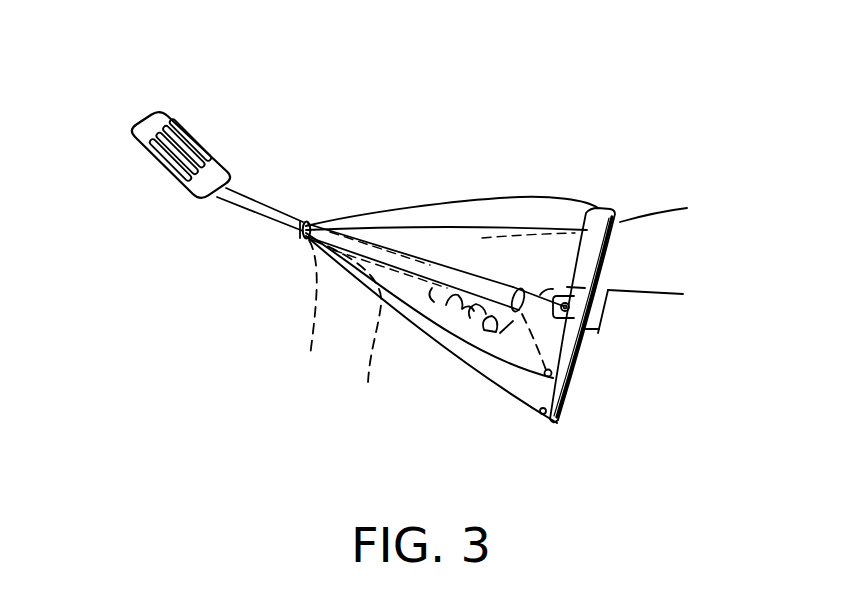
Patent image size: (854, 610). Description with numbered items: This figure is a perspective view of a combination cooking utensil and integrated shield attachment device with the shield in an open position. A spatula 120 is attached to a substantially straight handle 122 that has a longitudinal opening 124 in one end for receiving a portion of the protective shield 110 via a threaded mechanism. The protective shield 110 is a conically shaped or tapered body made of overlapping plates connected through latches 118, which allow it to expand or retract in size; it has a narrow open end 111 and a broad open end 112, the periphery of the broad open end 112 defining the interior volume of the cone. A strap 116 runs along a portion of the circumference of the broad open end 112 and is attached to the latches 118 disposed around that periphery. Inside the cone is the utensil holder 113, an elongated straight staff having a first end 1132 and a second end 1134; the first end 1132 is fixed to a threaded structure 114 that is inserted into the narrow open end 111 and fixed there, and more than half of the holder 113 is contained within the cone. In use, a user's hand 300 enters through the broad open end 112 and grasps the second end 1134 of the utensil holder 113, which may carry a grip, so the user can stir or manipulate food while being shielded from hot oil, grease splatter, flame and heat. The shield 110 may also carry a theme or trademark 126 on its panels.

The protective shield 110 is at (488, 372).
The narrow open end 111 is at (330, 227).
The broad open end 112 is at (518, 394).
The utensil holder 113 is at (351, 324).
The threaded structure 114 is at (310, 232).
The strap 116 is at (600, 212).
The latches 118 is at (567, 303).
The spatula 120 is at (153, 161).
The handle 122 is at (257, 212).
The longitudinal opening 124 is at (300, 218).
The trademark 126 is at (464, 242).
The first end 1132 is at (314, 310).
The second end 1134 is at (563, 390).
The user's hand 300 is at (645, 237).